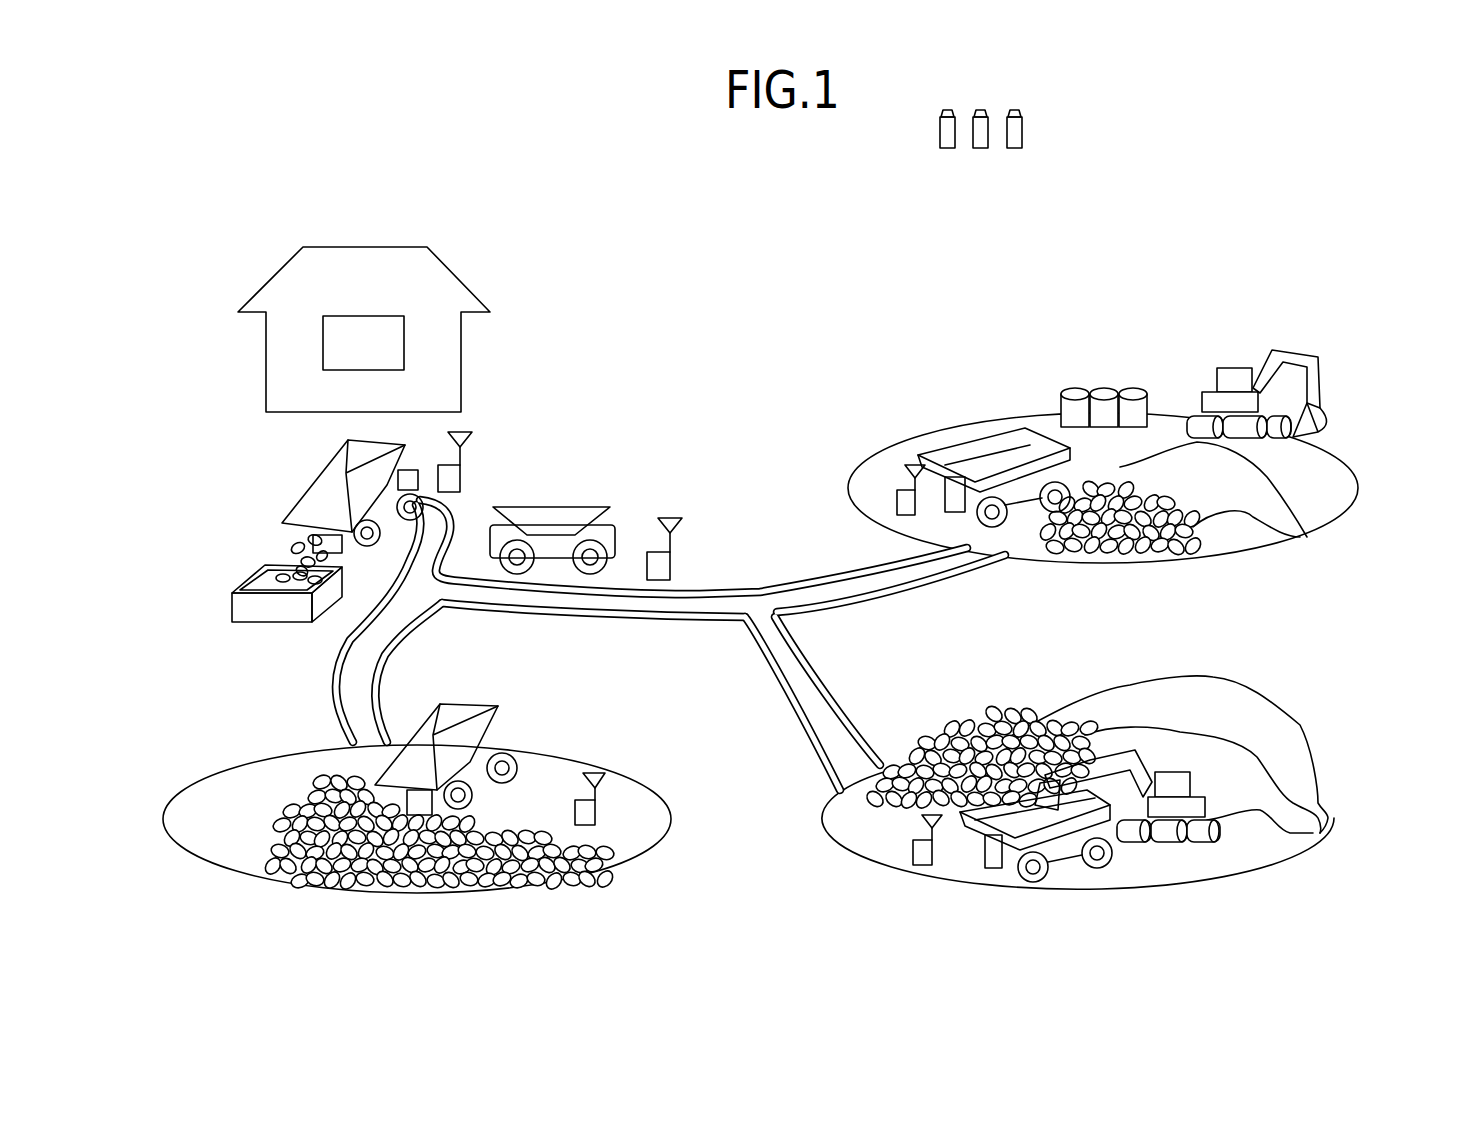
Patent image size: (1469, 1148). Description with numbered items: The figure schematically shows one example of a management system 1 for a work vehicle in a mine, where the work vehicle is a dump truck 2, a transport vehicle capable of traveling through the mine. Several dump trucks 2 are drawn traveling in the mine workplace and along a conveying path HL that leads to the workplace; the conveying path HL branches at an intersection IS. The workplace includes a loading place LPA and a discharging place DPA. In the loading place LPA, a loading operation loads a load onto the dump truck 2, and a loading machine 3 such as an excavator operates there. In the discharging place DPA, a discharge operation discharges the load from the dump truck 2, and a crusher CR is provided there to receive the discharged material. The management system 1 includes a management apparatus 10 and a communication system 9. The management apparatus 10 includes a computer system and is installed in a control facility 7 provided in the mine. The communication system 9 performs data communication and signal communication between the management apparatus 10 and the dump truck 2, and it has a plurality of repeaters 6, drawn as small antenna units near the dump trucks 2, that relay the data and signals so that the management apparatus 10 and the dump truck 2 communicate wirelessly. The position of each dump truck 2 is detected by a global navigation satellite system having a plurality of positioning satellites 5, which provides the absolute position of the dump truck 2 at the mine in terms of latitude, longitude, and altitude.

The management system 1 is at (1145, 206).
The dump truck 2 is at (320, 468).
The loading machine 3 is at (1235, 368).
The positioning satellite 5 is at (945, 150).
The repeater 6 is at (463, 453).
The control facility 7 is at (395, 246).
The communication system 9 is at (692, 427).
The management apparatus 10 is at (382, 316).
The crusher CR is at (273, 603).
The discharging place DPA is at (217, 588).
The loading place LPA is at (1452, 425).
The intersection IS is at (447, 612).
The conveying path HL is at (595, 613).